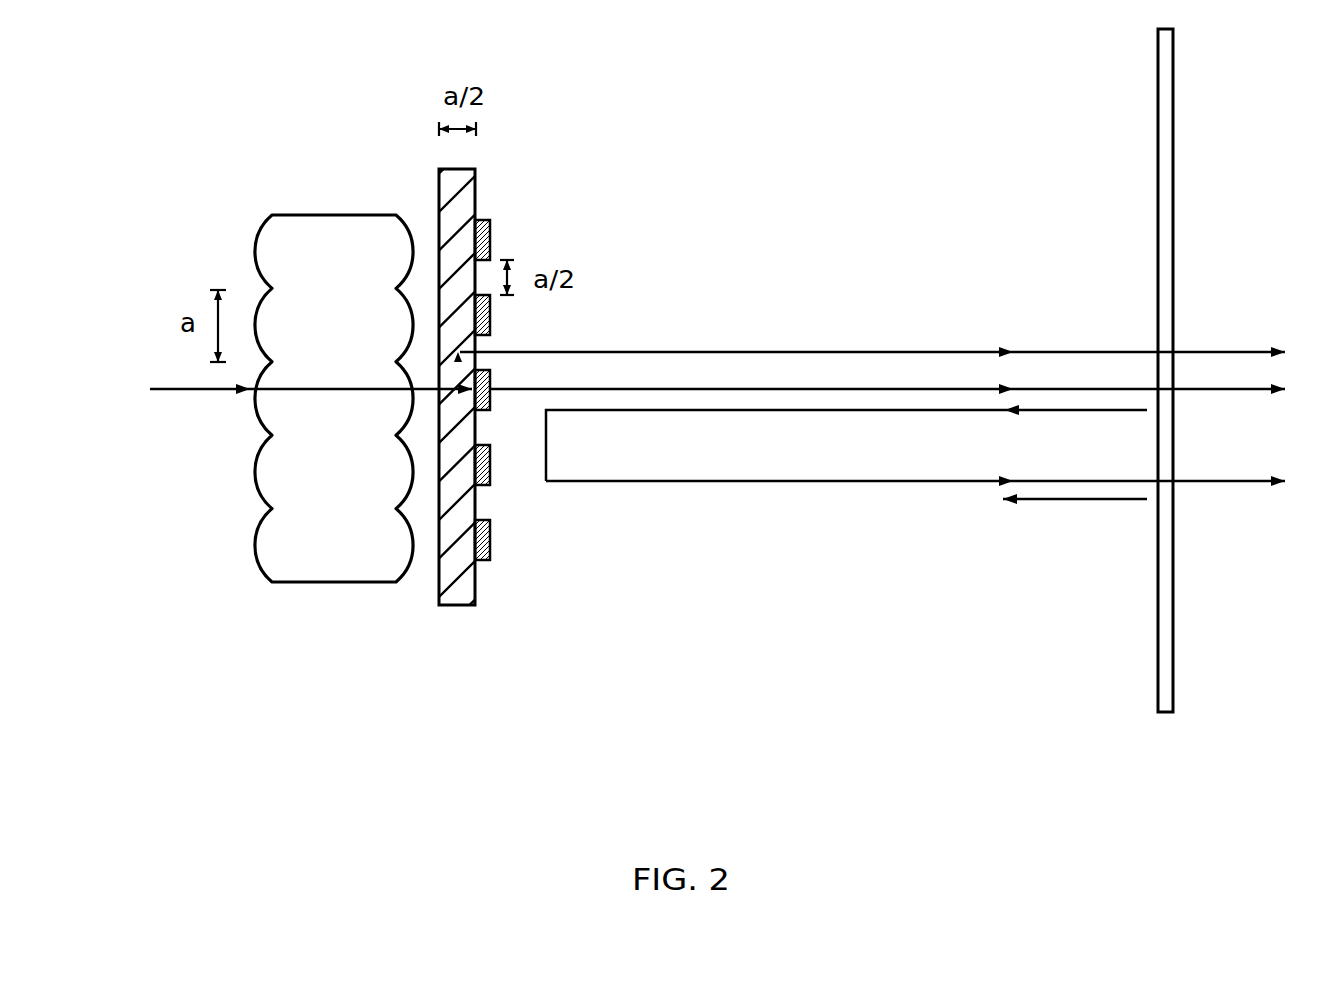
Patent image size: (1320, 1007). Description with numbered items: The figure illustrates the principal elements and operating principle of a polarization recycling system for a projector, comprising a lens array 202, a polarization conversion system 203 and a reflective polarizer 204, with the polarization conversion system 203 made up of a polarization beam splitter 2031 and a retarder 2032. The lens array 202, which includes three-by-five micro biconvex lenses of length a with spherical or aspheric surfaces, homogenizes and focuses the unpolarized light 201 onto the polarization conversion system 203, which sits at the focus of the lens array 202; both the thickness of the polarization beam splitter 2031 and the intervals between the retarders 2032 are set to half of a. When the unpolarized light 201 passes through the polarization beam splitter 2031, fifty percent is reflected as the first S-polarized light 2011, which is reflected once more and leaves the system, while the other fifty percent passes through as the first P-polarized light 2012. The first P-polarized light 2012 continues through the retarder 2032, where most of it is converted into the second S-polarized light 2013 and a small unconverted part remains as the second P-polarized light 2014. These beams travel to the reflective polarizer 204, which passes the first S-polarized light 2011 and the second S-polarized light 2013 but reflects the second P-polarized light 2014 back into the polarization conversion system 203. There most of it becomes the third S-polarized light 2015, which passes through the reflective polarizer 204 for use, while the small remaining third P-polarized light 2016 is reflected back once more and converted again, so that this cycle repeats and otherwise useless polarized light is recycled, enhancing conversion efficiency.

The unpolarized light 201 is at (311, 406).
The lens array 202 is at (333, 537).
The polarization conversion system 203 is at (506, 455).
The polarization beam splitter 2031 is at (462, 592).
The retarder 2032 is at (490, 565).
The reflective polarizer 204 is at (1162, 655).
The first S-polarized light 2011 is at (463, 352).
The first P-polarized light 2012 is at (458, 362).
The second S-polarized light 2013 is at (887, 376).
The second P-polarized light 2014 is at (846, 443).
The third S-polarized light 2015 is at (915, 463).
The third P-polarized light 2016 is at (1075, 511).